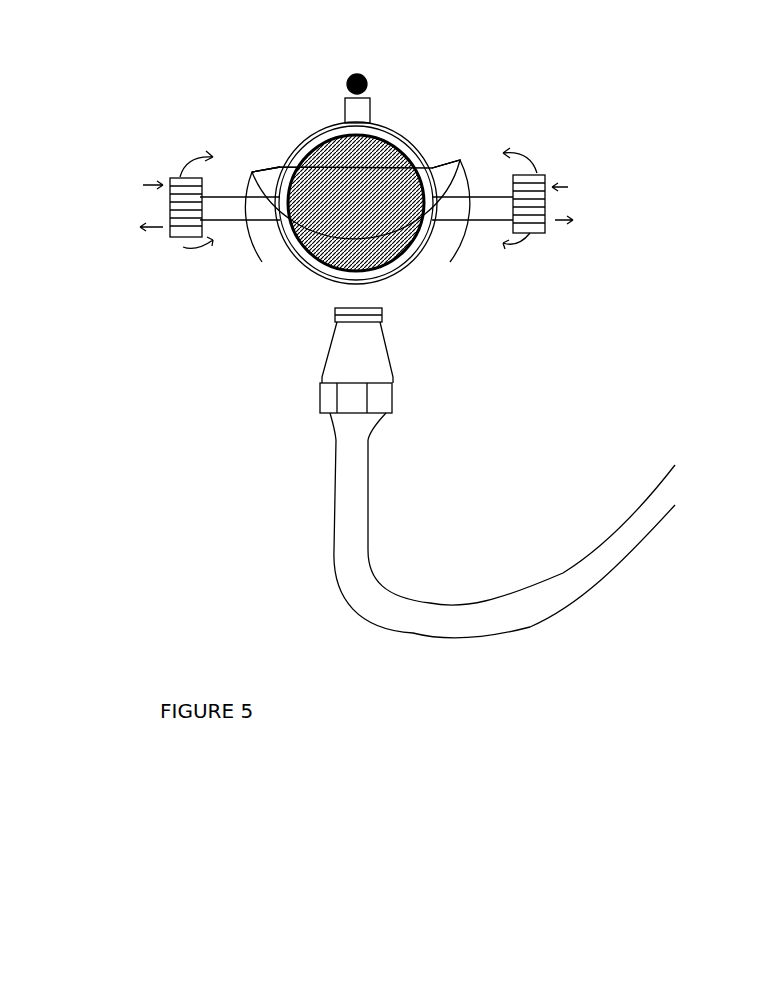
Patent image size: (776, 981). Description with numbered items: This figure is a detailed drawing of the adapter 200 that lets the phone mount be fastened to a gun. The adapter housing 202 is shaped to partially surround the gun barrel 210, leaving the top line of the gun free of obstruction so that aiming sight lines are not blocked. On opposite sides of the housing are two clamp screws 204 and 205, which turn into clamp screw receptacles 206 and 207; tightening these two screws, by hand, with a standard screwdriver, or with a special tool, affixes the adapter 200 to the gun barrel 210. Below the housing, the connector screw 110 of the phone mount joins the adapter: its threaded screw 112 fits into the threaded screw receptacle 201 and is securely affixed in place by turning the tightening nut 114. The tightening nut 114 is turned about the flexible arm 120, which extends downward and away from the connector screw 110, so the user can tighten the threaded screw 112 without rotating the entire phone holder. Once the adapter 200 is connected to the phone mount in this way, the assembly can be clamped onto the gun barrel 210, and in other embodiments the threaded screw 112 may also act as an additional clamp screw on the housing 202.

The connector screw 110 is at (387, 367).
The threaded screw 112 is at (362, 297).
The tightening nut 114 is at (357, 395).
The flexible arm 120 is at (370, 615).
The adapter 200 is at (293, 277).
The threaded screw receptacle 201 is at (343, 295).
The adapter housing 202 is at (267, 170).
The clamp screw 204 is at (173, 180).
The clamp screw 205 is at (255, 190).
The clamp screw receptacle 206 is at (545, 203).
The clamp screw receptacle 207 is at (440, 200).
The gun barrel 210 is at (408, 147).